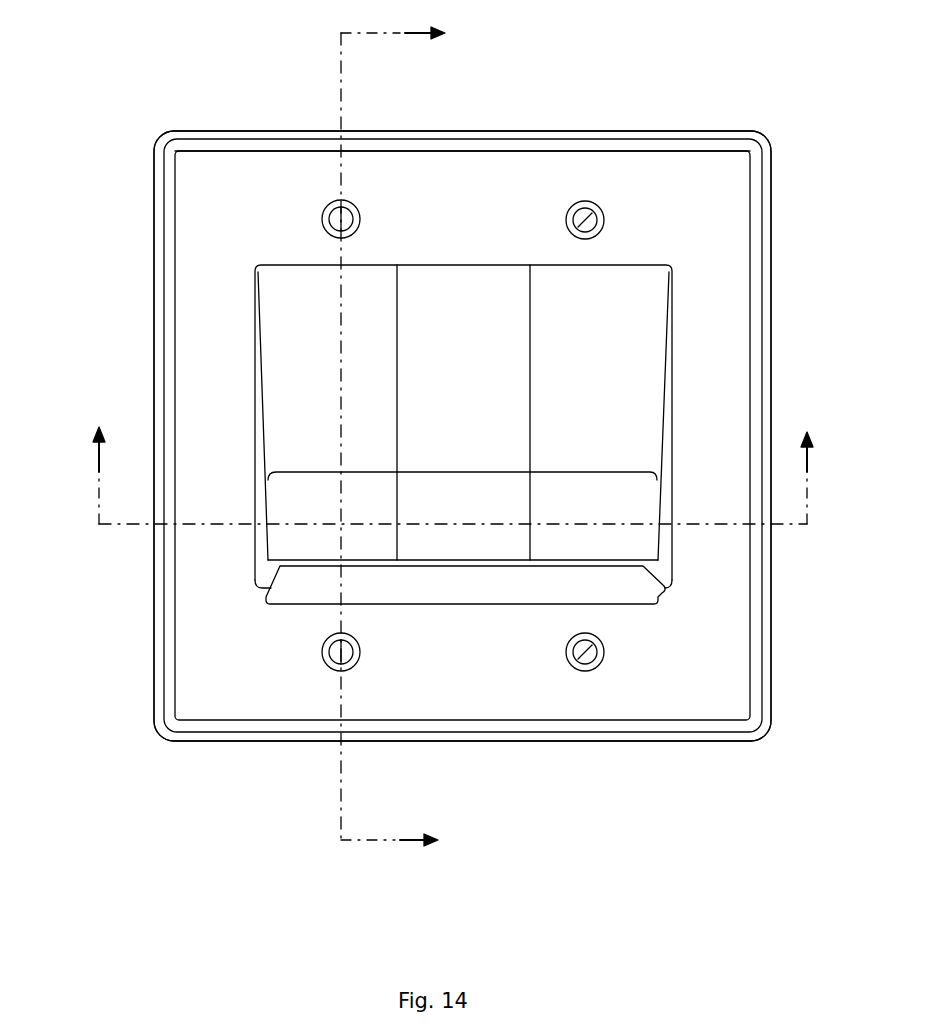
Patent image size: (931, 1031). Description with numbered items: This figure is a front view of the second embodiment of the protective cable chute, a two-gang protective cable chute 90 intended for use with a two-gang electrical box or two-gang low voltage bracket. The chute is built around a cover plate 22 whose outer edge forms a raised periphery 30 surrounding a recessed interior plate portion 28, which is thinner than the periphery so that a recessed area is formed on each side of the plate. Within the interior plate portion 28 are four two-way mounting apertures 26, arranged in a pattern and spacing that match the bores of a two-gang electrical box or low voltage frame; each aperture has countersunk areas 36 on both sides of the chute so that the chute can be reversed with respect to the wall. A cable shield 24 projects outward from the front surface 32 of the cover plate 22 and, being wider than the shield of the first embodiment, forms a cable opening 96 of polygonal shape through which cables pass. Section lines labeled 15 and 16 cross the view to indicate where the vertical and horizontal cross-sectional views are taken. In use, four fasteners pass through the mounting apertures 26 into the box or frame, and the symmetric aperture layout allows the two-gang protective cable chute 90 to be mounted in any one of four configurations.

The 2-gang protective cable chute 90 is at (112, 157).
The cover plate 22 is at (468, 131).
The raised periphery 30 is at (668, 140).
The recessed interior plate portion 28 is at (718, 268).
The front surface 32 is at (452, 225).
The two-way mounting apertures 26 is at (592, 213).
The countersunk areas 36 is at (592, 230).
The cable shield 24 is at (449, 420).
The cable opening 96 is at (455, 583).
The section line 15- 15 is at (393, 440).
The section line 16- 16 is at (453, 475).